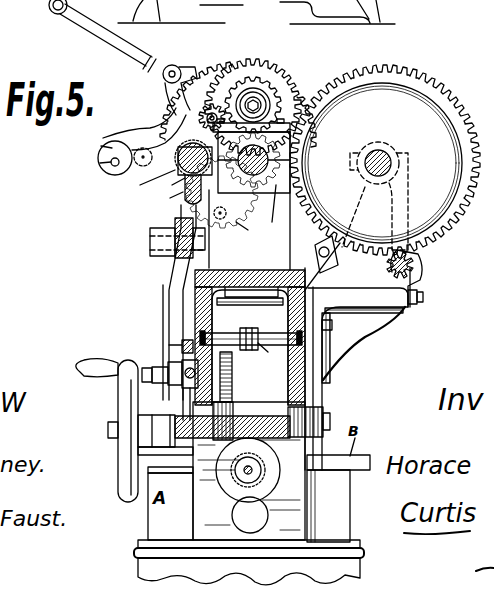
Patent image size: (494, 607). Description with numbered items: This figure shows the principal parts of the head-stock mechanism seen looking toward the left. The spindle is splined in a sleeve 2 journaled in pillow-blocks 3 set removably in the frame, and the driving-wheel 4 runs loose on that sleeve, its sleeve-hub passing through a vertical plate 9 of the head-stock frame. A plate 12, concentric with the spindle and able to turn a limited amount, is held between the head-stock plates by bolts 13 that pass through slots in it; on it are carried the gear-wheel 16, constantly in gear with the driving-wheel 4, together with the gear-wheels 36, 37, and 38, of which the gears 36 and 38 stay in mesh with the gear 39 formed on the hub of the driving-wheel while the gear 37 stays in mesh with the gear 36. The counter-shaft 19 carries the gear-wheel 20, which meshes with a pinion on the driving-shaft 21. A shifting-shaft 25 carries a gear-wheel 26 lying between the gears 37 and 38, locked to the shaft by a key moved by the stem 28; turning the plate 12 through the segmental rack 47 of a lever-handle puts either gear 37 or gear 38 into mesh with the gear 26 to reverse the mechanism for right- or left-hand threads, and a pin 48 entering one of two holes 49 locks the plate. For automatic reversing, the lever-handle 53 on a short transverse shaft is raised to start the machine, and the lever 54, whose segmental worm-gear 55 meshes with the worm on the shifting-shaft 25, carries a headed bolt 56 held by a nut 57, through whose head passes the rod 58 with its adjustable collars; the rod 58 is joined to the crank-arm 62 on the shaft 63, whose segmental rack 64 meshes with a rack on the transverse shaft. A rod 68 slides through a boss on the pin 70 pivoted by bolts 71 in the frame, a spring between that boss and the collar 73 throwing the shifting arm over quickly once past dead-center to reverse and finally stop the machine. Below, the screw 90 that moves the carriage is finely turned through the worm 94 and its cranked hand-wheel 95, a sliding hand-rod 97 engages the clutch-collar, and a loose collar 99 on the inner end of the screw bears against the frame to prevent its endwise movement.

The sleeve 2 is at (268, 152).
The pillow-blocks 3 is at (275, 176).
The driving-wheel 4 is at (246, 60).
The vertical plate 9 is at (290, 88).
The plate 12 is at (140, 135).
The bolts 13 is at (140, 185).
The gear-wheel 16 is at (318, 283).
The counter-shaft 19 is at (392, 166).
The gear-wheel 20 is at (450, 118).
The driving-shaft 21 is at (415, 262).
The shifting-shaft 25 is at (185, 182).
The gear-wheel 26 is at (190, 144).
The stem 28 is at (172, 185).
The gear-wheel 36 is at (266, 80).
The gear-wheel 37 is at (205, 107).
The gear-wheel 38 is at (236, 222).
The gear 39 is at (270, 212).
The segmental rack 47 is at (142, 54).
The pin 48 is at (100, 163).
The hole 49 is at (101, 146).
The lever-handle 53 is at (170, 347).
The lever 54 is at (188, 228).
The segmental worm-gear 55 is at (170, 198).
The headed bolt 56 is at (182, 366).
The nut 57 is at (142, 373).
The rod 58 is at (188, 382).
The crank-arm 62 is at (173, 447).
The shaft 63 is at (262, 416).
The segmental rack 64 is at (232, 368).
The rod 68 is at (255, 331).
The pin 70 is at (232, 333).
The bolts 71 is at (298, 343).
The collar 73 is at (271, 354).
The screw 90 is at (262, 474).
The worm 94 is at (330, 421).
The cranked hand-wheel 95 is at (128, 394).
The sliding hand-rod 97 is at (250, 515).
The loose collar 99 is at (231, 477).